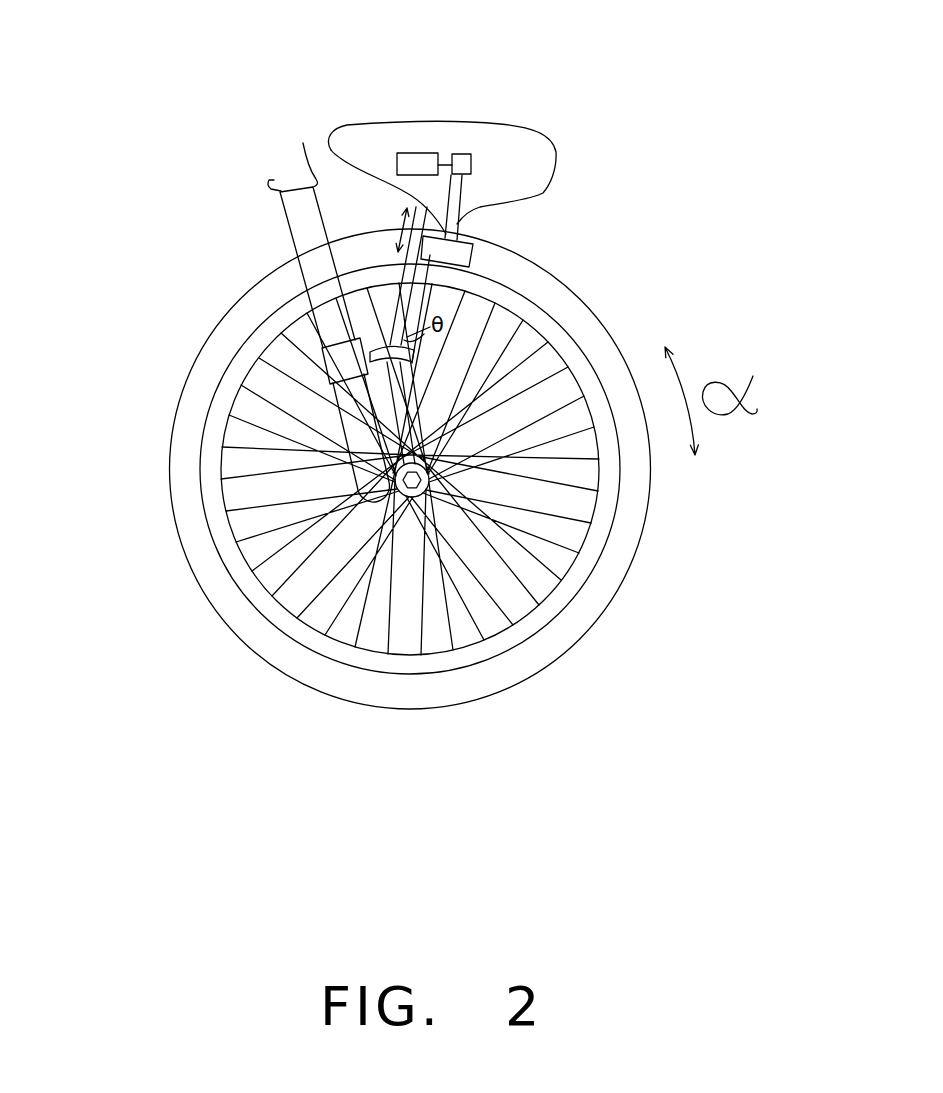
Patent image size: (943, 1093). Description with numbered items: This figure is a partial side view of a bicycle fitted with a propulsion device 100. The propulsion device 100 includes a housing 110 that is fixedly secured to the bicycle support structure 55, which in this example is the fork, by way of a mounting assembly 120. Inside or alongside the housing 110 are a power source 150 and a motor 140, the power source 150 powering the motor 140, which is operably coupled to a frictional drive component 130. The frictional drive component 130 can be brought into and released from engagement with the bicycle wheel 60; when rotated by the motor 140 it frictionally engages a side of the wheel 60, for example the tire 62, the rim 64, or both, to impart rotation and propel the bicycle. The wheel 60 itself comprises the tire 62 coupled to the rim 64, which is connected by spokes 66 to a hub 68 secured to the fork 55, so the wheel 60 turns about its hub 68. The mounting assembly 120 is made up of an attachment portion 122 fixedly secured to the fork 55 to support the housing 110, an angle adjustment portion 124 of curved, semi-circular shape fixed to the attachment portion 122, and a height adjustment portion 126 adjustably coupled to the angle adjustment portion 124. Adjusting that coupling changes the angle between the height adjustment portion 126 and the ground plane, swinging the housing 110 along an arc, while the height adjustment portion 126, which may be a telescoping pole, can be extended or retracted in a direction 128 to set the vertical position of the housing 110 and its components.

The propulsion device 100 is at (497, 102).
The housing 110 is at (377, 123).
The power source 150 is at (407, 143).
The motor 140 is at (460, 153).
The frictional drive component 130 is at (477, 242).
The height adjustment portion 126 is at (420, 273).
The direction 128 is at (411, 227).
The bicycle support structure 55 is at (305, 279).
The attachment portion 122 is at (335, 362).
The mounting assembly 120 is at (307, 368).
The angle adjustment portion 124 is at (415, 350).
The bicycle wheel 60 is at (440, 469).
The tire 62 is at (612, 578).
The rim 64 is at (598, 533).
The spokes 66 is at (258, 568).
The hub 68 is at (429, 481).